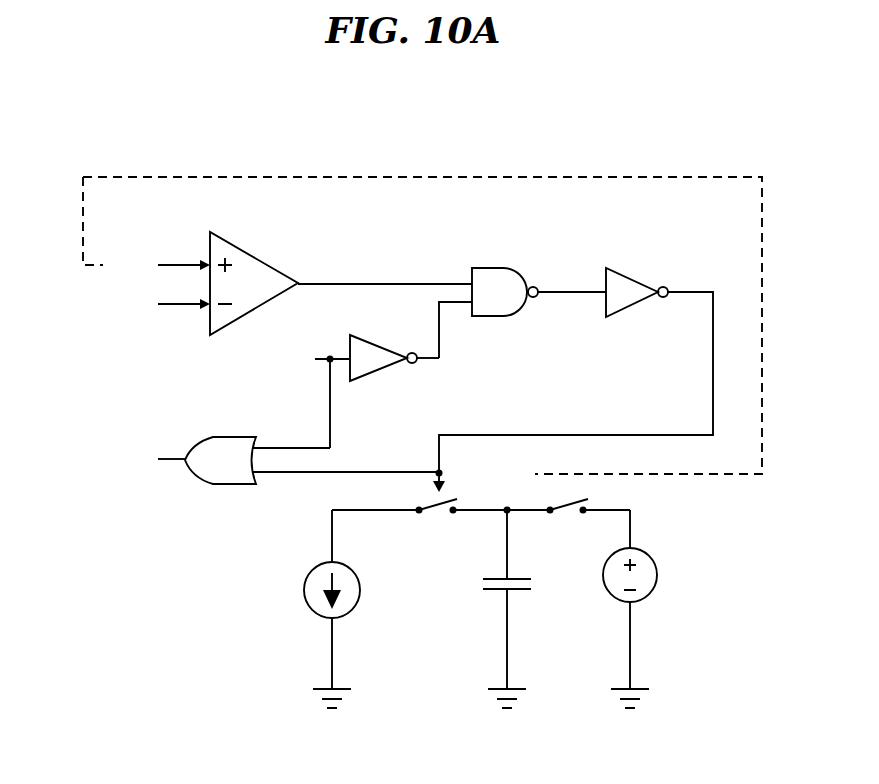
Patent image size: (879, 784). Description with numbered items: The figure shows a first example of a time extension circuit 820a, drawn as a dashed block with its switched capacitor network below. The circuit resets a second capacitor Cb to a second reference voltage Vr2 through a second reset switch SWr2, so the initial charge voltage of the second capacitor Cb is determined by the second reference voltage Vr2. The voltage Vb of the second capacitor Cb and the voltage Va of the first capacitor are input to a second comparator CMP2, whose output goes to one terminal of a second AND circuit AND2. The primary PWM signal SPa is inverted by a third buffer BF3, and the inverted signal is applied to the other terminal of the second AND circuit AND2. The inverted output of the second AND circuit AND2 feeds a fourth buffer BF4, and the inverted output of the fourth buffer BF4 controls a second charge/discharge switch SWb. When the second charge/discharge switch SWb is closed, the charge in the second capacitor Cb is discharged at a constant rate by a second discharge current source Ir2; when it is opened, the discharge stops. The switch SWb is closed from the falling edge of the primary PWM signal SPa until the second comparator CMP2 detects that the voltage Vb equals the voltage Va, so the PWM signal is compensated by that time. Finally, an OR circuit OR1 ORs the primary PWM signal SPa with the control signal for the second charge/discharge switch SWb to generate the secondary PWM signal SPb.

The time extension circuit 820a is at (750, 134).
The second comparator CMP2 is at (339, 266).
The second AND circuit AND2 is at (522, 289).
The third buffer BF3 is at (394, 378).
The fourth buffer BF4 is at (576, 347).
The OR circuit OR1 is at (315, 446).
The second charge/discharge switch SWb is at (419, 526).
The second reset switch SWr2 is at (568, 526).
The second capacitor Cb is at (484, 608).
The second discharge current source Ir2 is at (273, 573).
The second reference voltage Vr2 is at (658, 609).
The voltage of the second capacitor Vb is at (162, 265).
The voltage of the first capacitor Va is at (163, 304).
The primary PWM signal SPa is at (309, 397).
The secondary PWM signal SPb is at (143, 459).